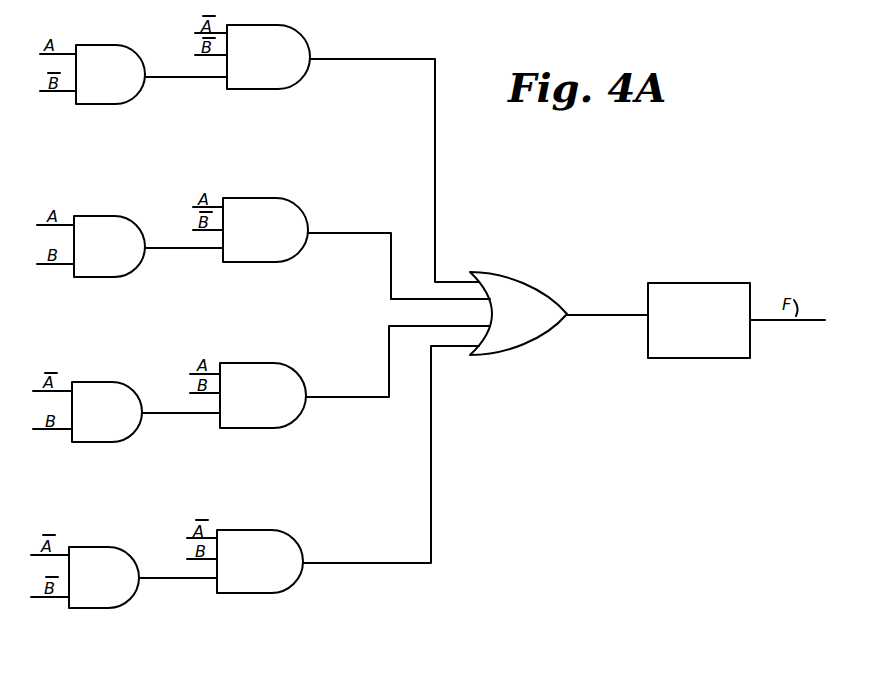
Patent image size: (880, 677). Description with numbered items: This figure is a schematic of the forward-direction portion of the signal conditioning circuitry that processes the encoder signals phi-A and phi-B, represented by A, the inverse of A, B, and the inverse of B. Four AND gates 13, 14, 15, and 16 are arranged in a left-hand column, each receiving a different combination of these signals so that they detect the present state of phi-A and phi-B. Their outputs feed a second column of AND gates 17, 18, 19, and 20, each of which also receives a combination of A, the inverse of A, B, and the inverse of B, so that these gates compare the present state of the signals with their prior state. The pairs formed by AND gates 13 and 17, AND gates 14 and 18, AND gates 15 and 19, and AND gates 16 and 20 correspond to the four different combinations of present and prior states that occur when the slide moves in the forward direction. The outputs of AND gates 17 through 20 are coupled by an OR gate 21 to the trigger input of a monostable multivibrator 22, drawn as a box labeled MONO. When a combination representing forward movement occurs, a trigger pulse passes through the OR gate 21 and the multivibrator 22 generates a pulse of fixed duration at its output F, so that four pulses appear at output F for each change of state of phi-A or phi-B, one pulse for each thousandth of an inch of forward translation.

The AND gate 13 is at (106, 45).
The AND gate 14 is at (106, 216).
The AND gate 15 is at (112, 382).
The AND gate 16 is at (110, 547).
The AND gate 17 is at (280, 25).
The AND gate 18 is at (296, 201).
The AND gate 19 is at (290, 365).
The AND gate 20 is at (288, 532).
The OR gate 21 is at (550, 262).
The monostable multivibrator 22 is at (698, 283).